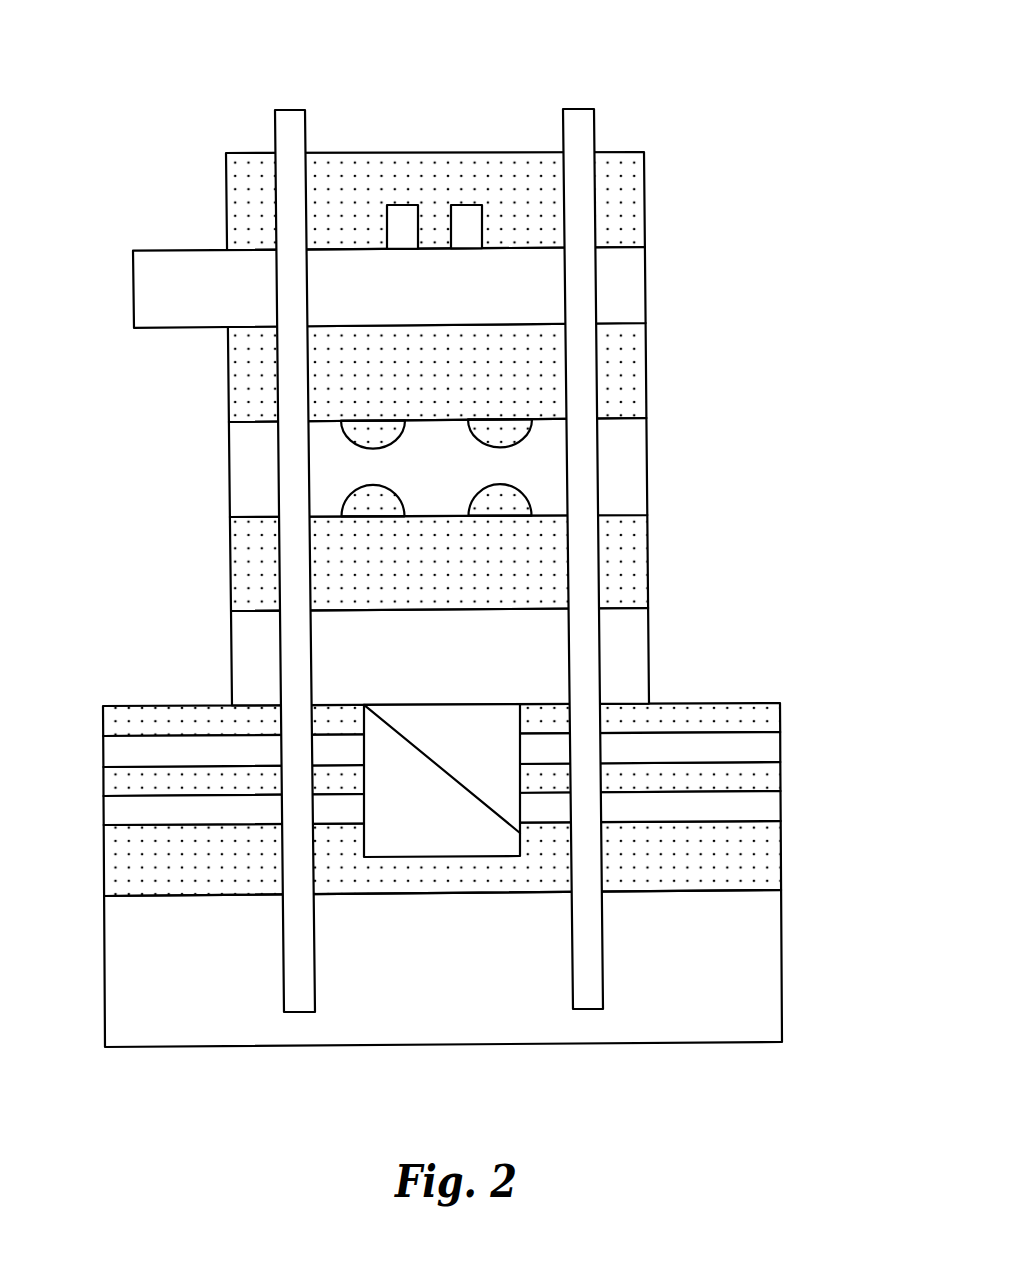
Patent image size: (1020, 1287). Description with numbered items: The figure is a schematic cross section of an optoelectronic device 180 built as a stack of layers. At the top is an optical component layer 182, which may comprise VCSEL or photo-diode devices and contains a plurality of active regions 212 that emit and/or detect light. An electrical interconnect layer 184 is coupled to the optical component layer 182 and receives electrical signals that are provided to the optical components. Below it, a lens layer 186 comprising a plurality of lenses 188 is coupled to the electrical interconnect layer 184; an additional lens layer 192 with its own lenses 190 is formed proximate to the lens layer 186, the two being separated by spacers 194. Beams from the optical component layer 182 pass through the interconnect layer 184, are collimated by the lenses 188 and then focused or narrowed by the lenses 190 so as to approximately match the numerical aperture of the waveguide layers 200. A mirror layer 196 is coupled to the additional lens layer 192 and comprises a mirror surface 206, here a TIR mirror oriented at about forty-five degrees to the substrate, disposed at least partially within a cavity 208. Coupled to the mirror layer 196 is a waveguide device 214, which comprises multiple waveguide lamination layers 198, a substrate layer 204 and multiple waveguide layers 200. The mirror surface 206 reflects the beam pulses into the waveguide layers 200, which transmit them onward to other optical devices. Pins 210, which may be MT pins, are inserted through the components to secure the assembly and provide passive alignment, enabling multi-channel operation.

The optoelectronic device 180 is at (214, 87).
The optical component layer 182 is at (645, 196).
The electrical interconnect layer 184 is at (646, 284).
The lens layer 186 is at (647, 371).
The lenses 188 is at (332, 438).
The lenses 190 is at (332, 499).
The additional lens layer 192 is at (648, 557).
The spacers 194 is at (647, 468).
The mirror layer 196 is at (648, 648).
The waveguide lamination layers 198 is at (780, 715).
The waveguide layers 200 is at (780, 748).
The substrate layer 204 is at (782, 1005).
The mirror surface 206 is at (483, 806).
The cavity 208 is at (429, 827).
The pins 210 is at (297, 113).
The active regions 212 is at (402, 205).
The waveguide device 214 is at (176, 1060).